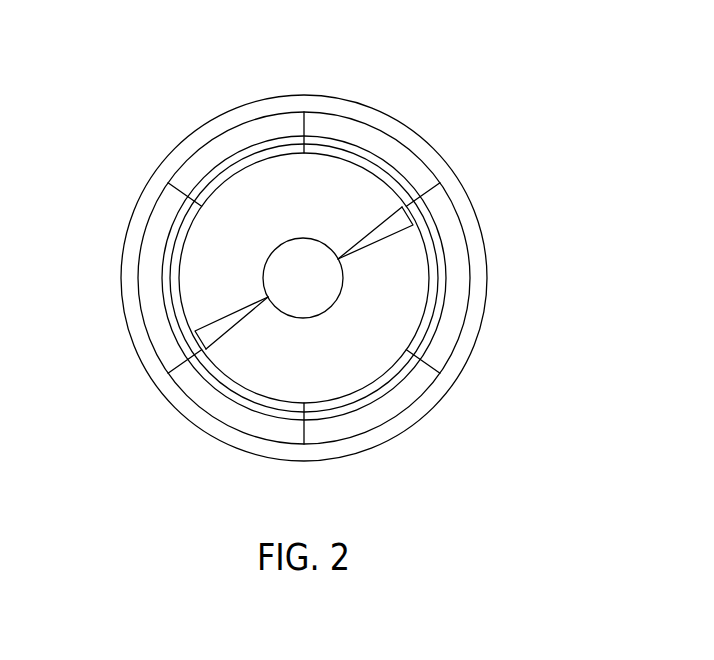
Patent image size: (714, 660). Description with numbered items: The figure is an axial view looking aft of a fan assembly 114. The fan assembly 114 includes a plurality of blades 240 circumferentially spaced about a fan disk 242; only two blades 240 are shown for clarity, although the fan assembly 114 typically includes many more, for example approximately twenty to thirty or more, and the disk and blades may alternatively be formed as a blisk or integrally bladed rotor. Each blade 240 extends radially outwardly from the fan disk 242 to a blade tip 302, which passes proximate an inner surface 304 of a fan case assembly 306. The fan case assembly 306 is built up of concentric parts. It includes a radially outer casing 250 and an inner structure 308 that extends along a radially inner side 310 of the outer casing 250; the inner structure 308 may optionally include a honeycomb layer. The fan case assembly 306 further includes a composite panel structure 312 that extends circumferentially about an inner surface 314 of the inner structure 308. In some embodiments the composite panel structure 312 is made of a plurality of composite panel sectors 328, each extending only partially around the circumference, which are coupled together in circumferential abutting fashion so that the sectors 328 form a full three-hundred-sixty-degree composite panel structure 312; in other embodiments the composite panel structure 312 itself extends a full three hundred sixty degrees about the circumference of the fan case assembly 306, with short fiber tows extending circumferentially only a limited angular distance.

The fan assembly 114 is at (419, 84).
The blade 240 is at (388, 230).
The fan disk 242 is at (295, 257).
The radially outer casing 250 is at (447, 393).
The blade tip 302 is at (392, 212).
The inner surface 304 is at (393, 362).
The fan case assembly 306 is at (150, 428).
The inner structure 308 is at (185, 178).
The radially inner side 310 is at (140, 272).
The composite panel structure 312 is at (435, 318).
The inner surface 314 is at (178, 210).
The composite panel sector 328 is at (422, 443).